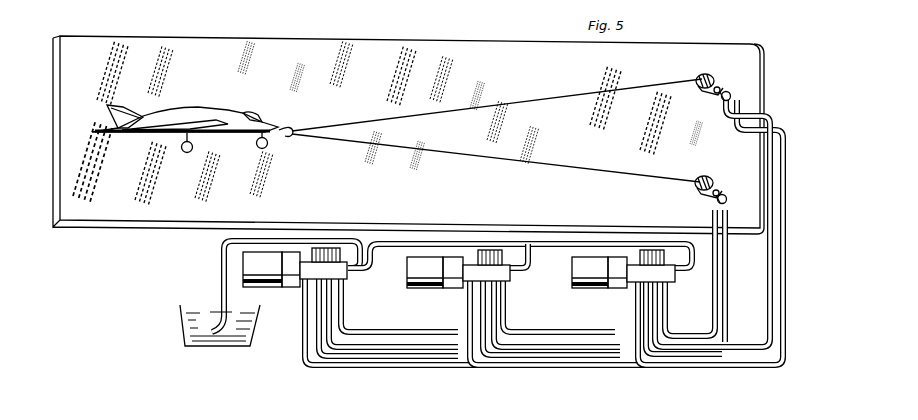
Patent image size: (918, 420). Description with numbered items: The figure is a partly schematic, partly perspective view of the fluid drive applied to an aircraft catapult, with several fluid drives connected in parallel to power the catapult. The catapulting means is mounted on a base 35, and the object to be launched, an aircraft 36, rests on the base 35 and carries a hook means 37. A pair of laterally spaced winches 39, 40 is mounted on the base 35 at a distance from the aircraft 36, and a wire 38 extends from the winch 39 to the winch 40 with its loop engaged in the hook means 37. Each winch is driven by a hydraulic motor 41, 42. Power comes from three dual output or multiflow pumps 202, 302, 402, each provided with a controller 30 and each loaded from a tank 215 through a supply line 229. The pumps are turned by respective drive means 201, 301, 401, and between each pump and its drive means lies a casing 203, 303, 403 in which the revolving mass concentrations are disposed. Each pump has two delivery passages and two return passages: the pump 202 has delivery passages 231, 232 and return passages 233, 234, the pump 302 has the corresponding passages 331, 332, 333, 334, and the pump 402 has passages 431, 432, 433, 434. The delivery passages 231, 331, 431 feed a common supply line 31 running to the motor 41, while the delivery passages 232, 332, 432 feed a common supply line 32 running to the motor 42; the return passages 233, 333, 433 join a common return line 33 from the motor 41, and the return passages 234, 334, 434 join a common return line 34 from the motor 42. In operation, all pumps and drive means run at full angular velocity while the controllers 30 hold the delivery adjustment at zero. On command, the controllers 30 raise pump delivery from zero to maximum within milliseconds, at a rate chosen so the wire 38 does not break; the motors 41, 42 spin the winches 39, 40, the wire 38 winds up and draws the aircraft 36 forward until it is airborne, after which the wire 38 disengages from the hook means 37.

The controller 30 is at (322, 247).
The common supply line 31 is at (786, 242).
The common supply line 32 is at (727, 280).
The common return line 33 is at (766, 309).
The common return line 34 is at (718, 257).
The base 35 is at (107, 224).
The aircraft 36 is at (197, 108).
The hook means 37 is at (288, 124).
The wire 38 is at (468, 108).
The winch 39 is at (700, 76).
The winch 40 is at (709, 196).
The hydraulic motor 41 is at (729, 93).
The hydraulic motor 42 is at (727, 198).
The drive means 201 is at (262, 269).
The multiflow pump 202 is at (323, 270).
The casing 203 is at (288, 288).
The tank 215 is at (182, 320).
The supply line 229 is at (222, 252).
The delivery passage 231 is at (346, 368).
The delivery passage 232 is at (396, 360).
The return passage 233 is at (358, 330).
The return passage 234 is at (387, 345).
The drive means 301 is at (425, 272).
The multiflow pump 302 is at (486, 273).
The casing 303 is at (452, 257).
The delivery passage 331 is at (468, 299).
The delivery passage 332 is at (482, 318).
The return passage 333 is at (499, 315).
The return passage 334 is at (506, 296).
The drive means 401 is at (590, 272).
The multiflow pump 402 is at (651, 273).
The casing 403 is at (622, 257).
The delivery passage 431 is at (637, 298).
The delivery passage 432 is at (645, 318).
The return passage 433 is at (658, 316).
The return passage 434 is at (668, 300).